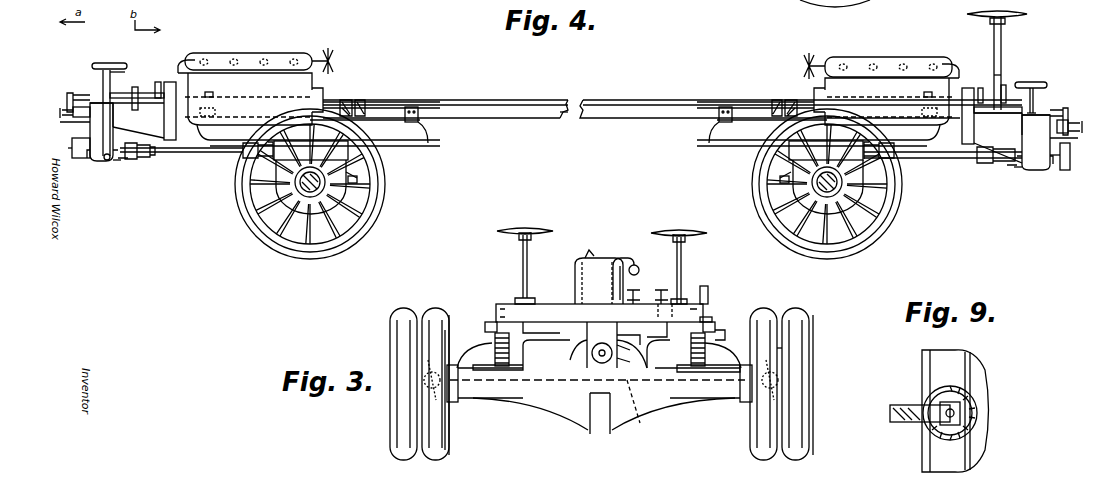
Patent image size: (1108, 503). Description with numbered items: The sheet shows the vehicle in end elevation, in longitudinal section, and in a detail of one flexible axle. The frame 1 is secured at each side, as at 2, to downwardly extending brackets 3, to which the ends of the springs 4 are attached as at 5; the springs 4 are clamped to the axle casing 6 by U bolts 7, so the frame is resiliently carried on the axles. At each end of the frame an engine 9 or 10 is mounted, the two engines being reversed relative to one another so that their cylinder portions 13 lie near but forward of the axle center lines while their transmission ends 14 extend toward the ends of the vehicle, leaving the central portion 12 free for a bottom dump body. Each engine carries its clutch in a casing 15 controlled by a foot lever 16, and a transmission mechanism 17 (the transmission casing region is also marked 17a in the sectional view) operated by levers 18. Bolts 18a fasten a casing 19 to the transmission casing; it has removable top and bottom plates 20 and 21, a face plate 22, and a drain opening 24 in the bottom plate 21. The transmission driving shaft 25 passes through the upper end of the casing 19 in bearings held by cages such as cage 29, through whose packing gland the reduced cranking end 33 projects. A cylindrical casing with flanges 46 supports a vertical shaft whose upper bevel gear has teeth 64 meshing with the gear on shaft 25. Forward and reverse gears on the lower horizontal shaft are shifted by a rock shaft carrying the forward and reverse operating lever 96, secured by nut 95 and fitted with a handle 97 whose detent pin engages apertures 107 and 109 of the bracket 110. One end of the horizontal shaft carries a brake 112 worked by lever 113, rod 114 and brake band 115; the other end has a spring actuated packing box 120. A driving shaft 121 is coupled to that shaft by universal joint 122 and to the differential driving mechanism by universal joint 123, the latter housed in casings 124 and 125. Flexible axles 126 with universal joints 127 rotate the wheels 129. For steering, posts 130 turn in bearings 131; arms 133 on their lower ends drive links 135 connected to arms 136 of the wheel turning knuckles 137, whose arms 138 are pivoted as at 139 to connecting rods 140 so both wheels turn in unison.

In FIG. 4, the frame 1 is at (560, 120).
In FIG. 3, the frame 1 is at (540, 304).
In FIG. 4, the bracket securing point 2 is at (420, 107).
In FIG. 4, the downwardly extending bracket 3 is at (425, 128).
In FIG. 3, the downwardly extending bracket 3 is at (490, 322).
In FIG. 4, the spring 4 is at (412, 148).
In FIG. 3, the spring 4 is at (458, 405).
In FIG. 4, the spring attachment point 5 is at (430, 142).
In FIG. 4, the axle casing 6 is at (308, 240).
In FIG. 3, the axle casing 6 is at (525, 368).
In FIG. 9, the axle casing 6 is at (893, 422).
In FIG. 3, the U bolt 7 is at (510, 362).
In FIG. 4, the engine 9 is at (255, 53).
In FIG. 4, the engine 10 is at (892, 58).
In FIG. 4, the central portion 12 is at (528, 100).
In FIG. 4, the cylinder portion 13 is at (312, 53).
In FIG. 4, the transmission end 14 is at (60, 122).
In FIG. 4, the clutch casing 15 is at (190, 62).
In FIG. 3, the clutch casing 15 is at (630, 290).
In FIG. 4, the foot lever 16 is at (170, 82).
In FIG. 3, the foot lever 16 is at (660, 290).
In FIG. 4, the transmission mechanism 17 is at (138, 120).
In FIG. 4, the bracket 17a is at (998, 138).
In FIG. 4, the lever 18 is at (135, 87).
In FIG. 3, the lever 18 is at (664, 300).
In FIG. 4, the bolt 18a is at (131, 122).
In FIG. 4, the casing 19 is at (1044, 170).
In FIG. 3, the casing 19 is at (578, 304).
In FIG. 4, the top removable plate 20 is at (98, 103).
In FIG. 4, the bottom removable plate 21 is at (117, 162).
In FIG. 3, the face plate 22 is at (635, 336).
In FIG. 4, the opening 24 is at (1017, 170).
In FIG. 4, the transmission driving shaft 25 is at (72, 94).
In FIG. 4, the bearing cage 29 is at (60, 116).
In FIG. 4, the reduced cranking end 33 is at (70, 108).
In FIG. 3, the reduced cranking end 33 is at (585, 262).
In FIG. 4, the flange 46 is at (135, 93).
In FIG. 4, the teeth 64 is at (92, 162).
In FIG. 4, the nut 95 is at (118, 162).
In FIG. 3, the nut 95 is at (630, 360).
In FIG. 3, the forward and reverse operating lever 96 is at (630, 348).
In FIG. 4, the handle 97 is at (110, 70).
In FIG. 3, the handle 97 is at (626, 258).
In FIG. 4, the aperture 107 is at (98, 63).
In FIG. 4, the aperture 109 is at (125, 70).
In FIG. 4, the bracket 110 is at (1036, 85).
In FIG. 3, the bracket 110 is at (630, 265).
In FIG. 4, the brake 112 is at (97, 162).
In FIG. 3, the brake 112 is at (595, 366).
In FIG. 4, the lever 113 is at (1001, 70).
In FIG. 3, the lever 113 is at (704, 286).
In FIG. 4, the rod 114 is at (1033, 82).
In FIG. 3, the rod 114 is at (668, 372).
In FIG. 4, the brake band 115 is at (68, 146).
In FIG. 4, the spring actuated packing box 120 is at (125, 160).
In FIG. 4, the driving shaft 121 is at (240, 152).
In FIG. 4, the universal joint 122 is at (140, 159).
In FIG. 4, the universal joint 123 is at (240, 178).
In FIG. 4, the casing 124 is at (348, 160).
In FIG. 3, the casing 124 is at (629, 385).
In FIG. 4, the casing 125 is at (330, 235).
In FIG. 3, the casing 125 is at (592, 436).
In FIG. 4, the axle 126 is at (345, 200).
In FIG. 3, the axle 126 is at (535, 400).
In FIG. 9, the axle 126 is at (900, 405).
In FIG. 9, the universal joint 127 is at (978, 413).
In FIG. 4, the wheel 129 is at (272, 240).
In FIG. 3, the wheel 129 is at (440, 438).
In FIG. 9, the wheel 129 is at (978, 380).
In FIG. 4, the steering post 130 is at (1027, 14).
In FIG. 3, the steering post 130 is at (523, 255).
In FIG. 3, the bearing 131 is at (709, 322).
In FIG. 3, the arm 133 is at (722, 332).
In FIG. 3, the link 135 is at (475, 330).
In FIG. 3, the arm 136 is at (810, 348).
In FIG. 3, the wheel turning knuckle 137 is at (795, 385).
In FIG. 4, the arm 138 is at (357, 180).
In FIG. 3, the arm 138 is at (425, 395).
In FIG. 3, the pivot 139 is at (548, 330).
In FIG. 4, the connecting rod 140 is at (352, 175).
In FIG. 3, the connecting rod 140 is at (645, 407).